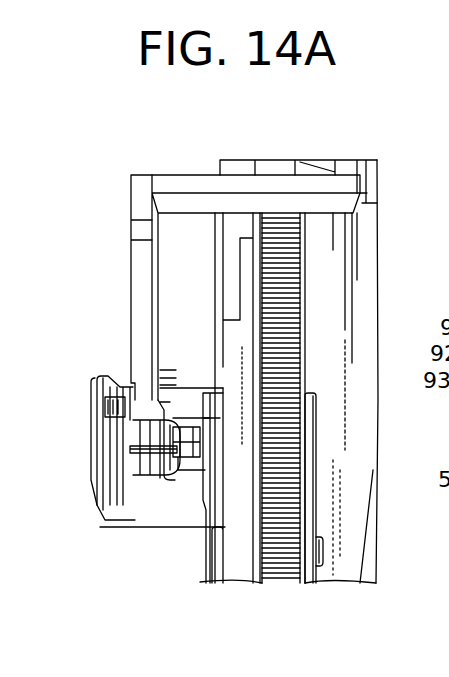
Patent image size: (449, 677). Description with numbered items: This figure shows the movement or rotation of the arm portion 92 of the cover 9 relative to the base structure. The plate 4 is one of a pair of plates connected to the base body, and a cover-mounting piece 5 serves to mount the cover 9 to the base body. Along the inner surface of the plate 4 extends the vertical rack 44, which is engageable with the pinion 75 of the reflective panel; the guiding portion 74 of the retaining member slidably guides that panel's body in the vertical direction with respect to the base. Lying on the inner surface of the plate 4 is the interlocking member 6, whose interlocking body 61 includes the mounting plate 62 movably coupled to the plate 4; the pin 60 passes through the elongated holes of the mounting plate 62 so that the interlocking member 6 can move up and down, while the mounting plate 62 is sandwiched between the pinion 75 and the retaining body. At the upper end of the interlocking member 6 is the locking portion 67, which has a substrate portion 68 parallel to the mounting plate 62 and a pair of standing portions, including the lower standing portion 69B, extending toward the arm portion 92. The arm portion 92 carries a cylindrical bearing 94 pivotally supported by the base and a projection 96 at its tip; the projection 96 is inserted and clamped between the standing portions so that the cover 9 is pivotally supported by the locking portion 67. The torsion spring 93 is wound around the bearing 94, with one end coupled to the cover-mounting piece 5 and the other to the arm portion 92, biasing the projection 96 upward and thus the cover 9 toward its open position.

The plate 4 is at (305, 292).
The cover-mounting piece 5 is at (90, 480).
The interlocking member 6 is at (326, 409).
The cover 9 is at (120, 293).
The rack 44 is at (305, 284).
The pin 60 is at (322, 551).
The interlocking body 61 is at (316, 416).
The mounting plate 62 is at (305, 447).
The locking portion 67 is at (207, 518).
The substrate portion 68 is at (205, 500).
The lower standing portion 69B is at (196, 497).
The guiding portion 74 is at (305, 221).
The pinion 75 is at (302, 234).
The arm portion 92 is at (120, 316).
The torsion spring 93 is at (97, 391).
The cylindrical bearing 94 is at (168, 478).
The projection 96 is at (182, 488).